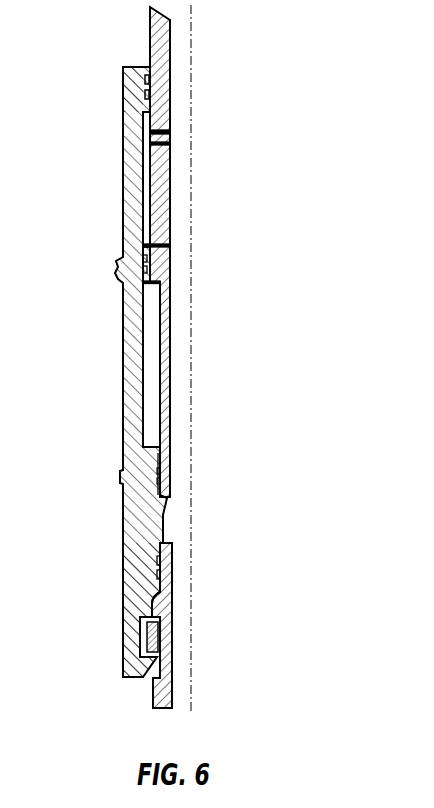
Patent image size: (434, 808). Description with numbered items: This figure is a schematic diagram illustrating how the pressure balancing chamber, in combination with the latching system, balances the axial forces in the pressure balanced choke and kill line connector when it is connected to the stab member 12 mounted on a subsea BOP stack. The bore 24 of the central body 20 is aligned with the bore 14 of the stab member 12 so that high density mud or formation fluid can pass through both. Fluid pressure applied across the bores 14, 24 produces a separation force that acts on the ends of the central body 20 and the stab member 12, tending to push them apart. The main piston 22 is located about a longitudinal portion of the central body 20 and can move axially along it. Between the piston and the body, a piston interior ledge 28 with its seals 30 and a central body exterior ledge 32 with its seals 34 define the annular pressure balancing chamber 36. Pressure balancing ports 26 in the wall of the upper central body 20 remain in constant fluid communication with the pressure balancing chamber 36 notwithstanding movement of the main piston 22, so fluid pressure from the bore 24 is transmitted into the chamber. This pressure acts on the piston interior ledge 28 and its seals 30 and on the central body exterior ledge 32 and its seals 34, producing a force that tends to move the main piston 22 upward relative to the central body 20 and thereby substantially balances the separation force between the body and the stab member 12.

The stab member 12 is at (153, 690).
The bore 14 is at (175, 665).
The central body 20 is at (172, 55).
The main piston 22 is at (128, 200).
The bore 24 is at (170, 131).
The pressure balancing ports 26 is at (170, 144).
The piston interior ledge 28 is at (138, 97).
The seals 30 is at (132, 67).
The central body exterior ledge 32 is at (163, 282).
The seals 34 is at (163, 243).
The pressure balancing chamber 36 is at (140, 246).